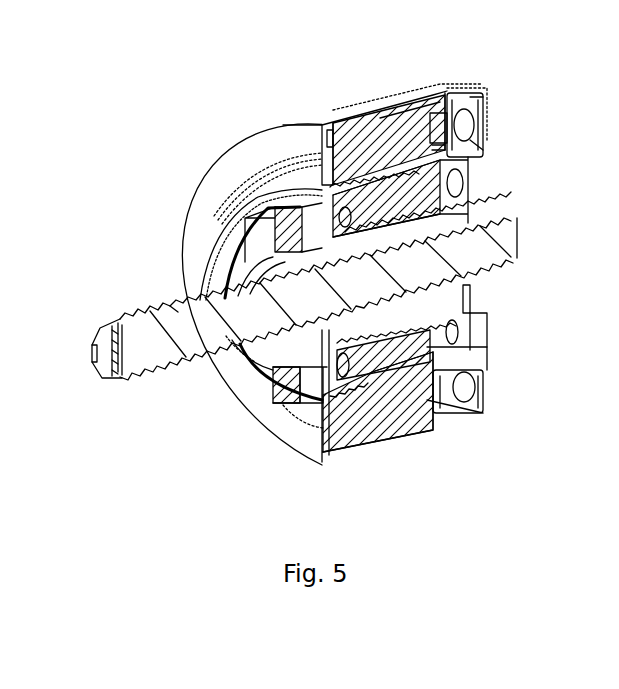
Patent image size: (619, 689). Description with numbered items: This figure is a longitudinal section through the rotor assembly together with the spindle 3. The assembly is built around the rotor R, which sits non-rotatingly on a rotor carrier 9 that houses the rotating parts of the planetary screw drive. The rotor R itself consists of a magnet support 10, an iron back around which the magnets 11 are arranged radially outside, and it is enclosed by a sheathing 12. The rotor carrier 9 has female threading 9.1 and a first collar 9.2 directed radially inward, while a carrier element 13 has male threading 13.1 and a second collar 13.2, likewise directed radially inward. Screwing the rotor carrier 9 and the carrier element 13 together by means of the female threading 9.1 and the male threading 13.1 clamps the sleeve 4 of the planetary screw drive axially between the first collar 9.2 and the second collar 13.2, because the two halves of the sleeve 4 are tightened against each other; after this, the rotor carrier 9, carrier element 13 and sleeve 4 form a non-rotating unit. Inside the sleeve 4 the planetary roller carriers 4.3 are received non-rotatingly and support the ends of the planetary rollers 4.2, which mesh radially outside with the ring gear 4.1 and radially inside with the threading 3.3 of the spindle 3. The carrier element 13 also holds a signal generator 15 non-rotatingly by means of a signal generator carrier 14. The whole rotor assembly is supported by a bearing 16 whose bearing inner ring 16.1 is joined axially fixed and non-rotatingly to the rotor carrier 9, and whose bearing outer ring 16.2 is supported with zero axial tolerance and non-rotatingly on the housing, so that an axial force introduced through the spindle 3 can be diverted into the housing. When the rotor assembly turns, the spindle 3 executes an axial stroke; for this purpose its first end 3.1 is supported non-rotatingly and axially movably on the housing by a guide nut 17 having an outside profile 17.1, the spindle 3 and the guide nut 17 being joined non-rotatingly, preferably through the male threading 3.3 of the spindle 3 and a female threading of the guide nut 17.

The rotor R is at (287, 125).
The rotor carrier 9 is at (320, 207).
The carrier element 13 is at (267, 210).
The signal generator carrier 14 is at (308, 195).
The signal generator 15 is at (250, 223).
The spindle 3 is at (222, 320).
The threading of the spindle 3.3 is at (173, 308).
The guide nut 17 is at (102, 352).
The outside profile 17.1 is at (93, 363).
The first end of the spindle 3.1 is at (132, 352).
The second collar 13.2 is at (327, 365).
The male threading 13.1 is at (340, 400).
The sheathing 12 is at (330, 118).
The magnet support 10 is at (368, 150).
The magnets 11 is at (393, 103).
The bearing outer ring 16.2 is at (482, 97).
The bearing 16 is at (487, 115).
The bearing inner ring 16.1 is at (475, 138).
The sleeve 4 is at (463, 170).
The ring gear 4.1 is at (427, 192).
The planetary rollers 4.2 is at (442, 300).
The planetary roller carriers 4.3 is at (462, 306).
The first collar 9.2 is at (480, 320).
The female threading 9.1 is at (370, 372).